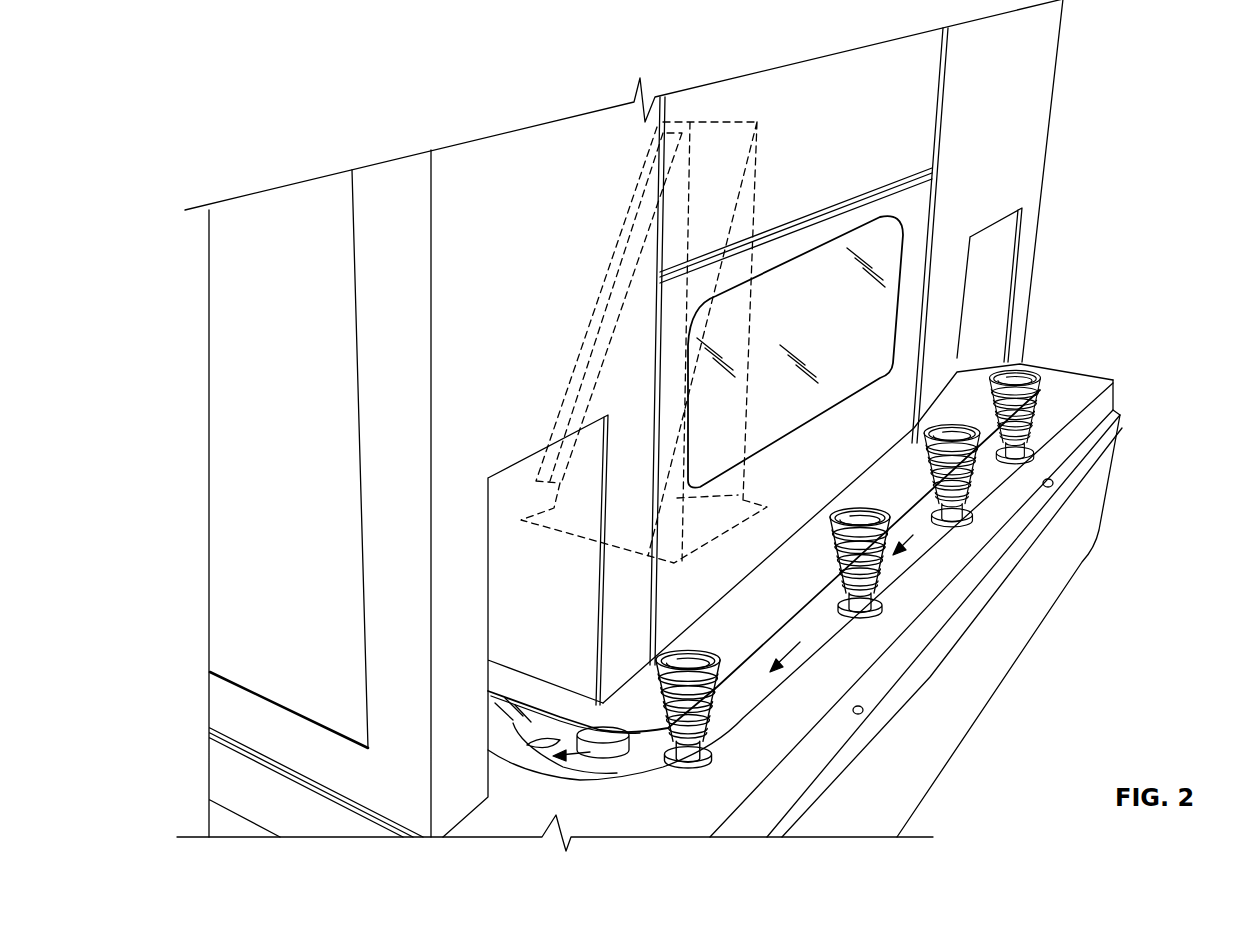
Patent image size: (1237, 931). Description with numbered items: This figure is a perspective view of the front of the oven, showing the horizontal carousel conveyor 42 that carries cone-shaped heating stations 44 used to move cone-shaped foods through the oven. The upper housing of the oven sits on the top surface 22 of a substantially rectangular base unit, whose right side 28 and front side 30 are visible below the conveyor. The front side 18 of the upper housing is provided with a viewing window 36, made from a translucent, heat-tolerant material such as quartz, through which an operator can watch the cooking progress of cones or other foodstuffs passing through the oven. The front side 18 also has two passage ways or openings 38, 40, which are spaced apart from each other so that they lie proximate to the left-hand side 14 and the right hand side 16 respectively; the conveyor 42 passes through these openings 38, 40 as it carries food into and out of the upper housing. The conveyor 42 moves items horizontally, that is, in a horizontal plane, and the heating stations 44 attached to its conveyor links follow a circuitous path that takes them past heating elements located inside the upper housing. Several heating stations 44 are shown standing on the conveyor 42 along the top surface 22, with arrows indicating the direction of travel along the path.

The left-hand side 14 is at (404, 451).
The right hand side 16 is at (1041, 245).
The front side 18 is at (1008, 118).
The top surface 22 is at (1073, 371).
The right side 28 is at (1120, 428).
The front side 30 is at (1087, 493).
The viewing window 36 is at (826, 327).
The opening 38 is at (511, 466).
The opening 40 is at (1000, 220).
The horizontal carousel conveyor 42 is at (733, 712).
The heating station 44 is at (1027, 368).